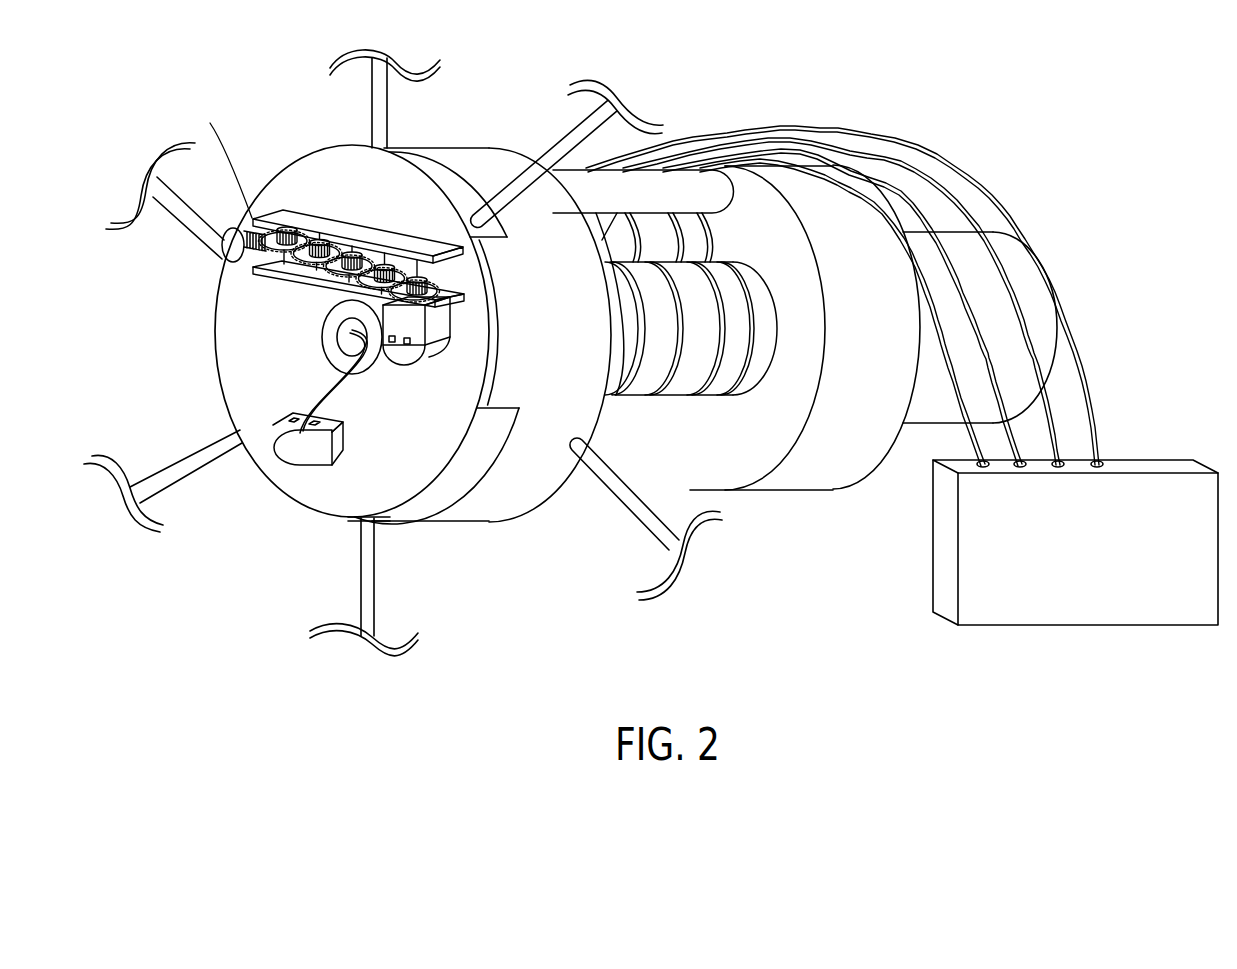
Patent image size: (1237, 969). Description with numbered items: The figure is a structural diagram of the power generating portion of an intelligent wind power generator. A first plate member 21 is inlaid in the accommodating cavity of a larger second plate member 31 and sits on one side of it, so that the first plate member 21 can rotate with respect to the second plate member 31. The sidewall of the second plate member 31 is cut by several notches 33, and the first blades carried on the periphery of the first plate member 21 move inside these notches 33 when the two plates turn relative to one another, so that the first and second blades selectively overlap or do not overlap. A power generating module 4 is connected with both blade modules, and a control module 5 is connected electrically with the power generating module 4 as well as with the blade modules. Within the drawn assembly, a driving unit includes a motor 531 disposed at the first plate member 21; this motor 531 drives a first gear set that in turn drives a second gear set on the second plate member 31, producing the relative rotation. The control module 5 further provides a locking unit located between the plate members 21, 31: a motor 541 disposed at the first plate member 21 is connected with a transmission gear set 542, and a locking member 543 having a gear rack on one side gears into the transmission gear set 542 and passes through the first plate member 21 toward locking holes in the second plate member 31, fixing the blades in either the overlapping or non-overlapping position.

The first plate member 21 is at (248, 357).
The second plate member 31 is at (533, 475).
The notch 33 is at (458, 498).
The power generating module 4 is at (765, 512).
The control module 5 is at (1087, 650).
The motor 531 is at (317, 450).
The motor 541 is at (438, 338).
The transmission gear set 542 is at (337, 212).
The locking member 543 is at (210, 248).